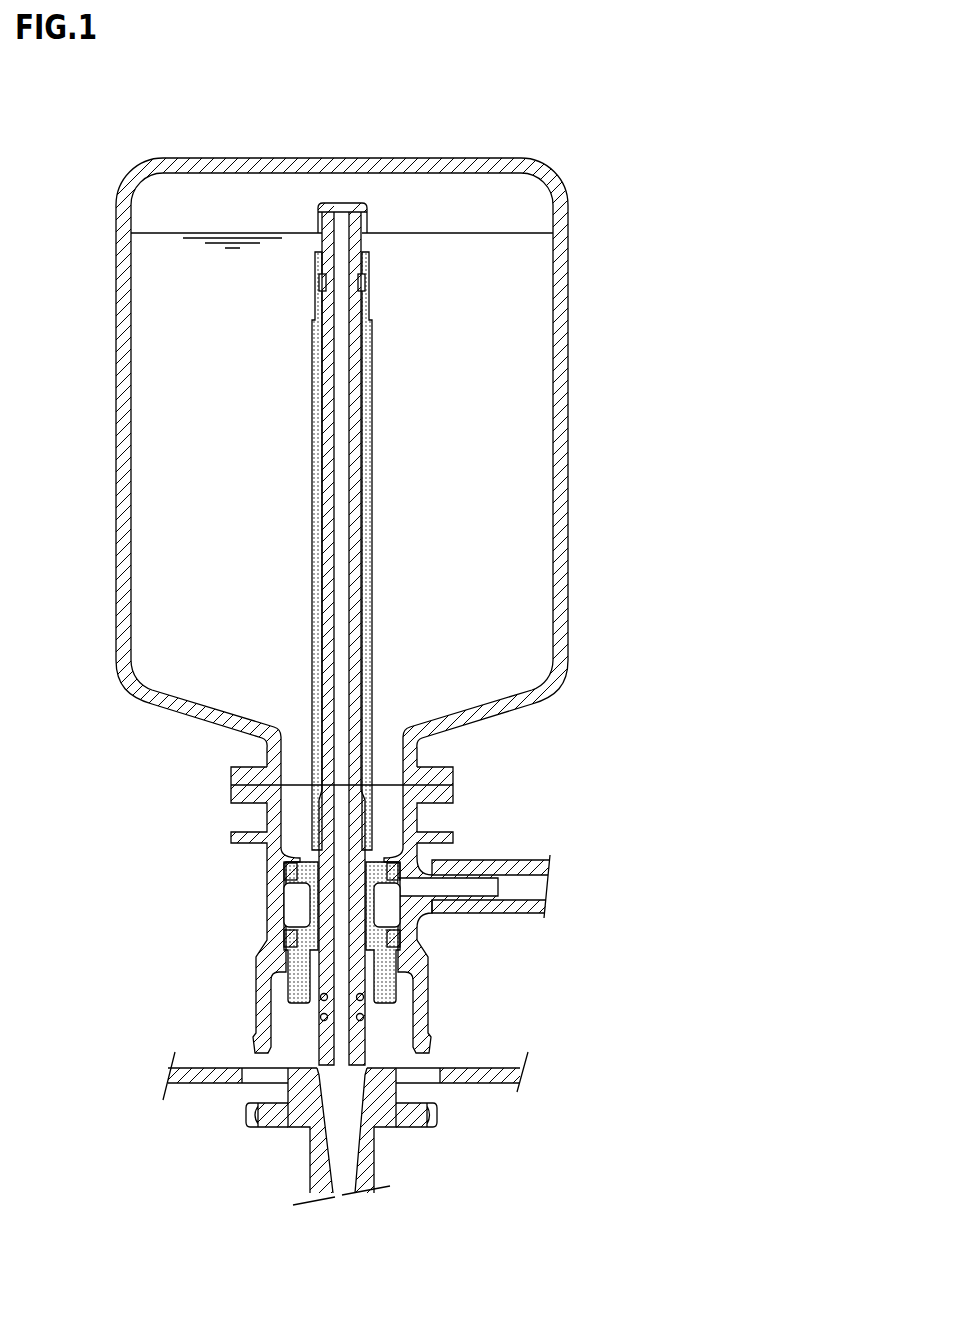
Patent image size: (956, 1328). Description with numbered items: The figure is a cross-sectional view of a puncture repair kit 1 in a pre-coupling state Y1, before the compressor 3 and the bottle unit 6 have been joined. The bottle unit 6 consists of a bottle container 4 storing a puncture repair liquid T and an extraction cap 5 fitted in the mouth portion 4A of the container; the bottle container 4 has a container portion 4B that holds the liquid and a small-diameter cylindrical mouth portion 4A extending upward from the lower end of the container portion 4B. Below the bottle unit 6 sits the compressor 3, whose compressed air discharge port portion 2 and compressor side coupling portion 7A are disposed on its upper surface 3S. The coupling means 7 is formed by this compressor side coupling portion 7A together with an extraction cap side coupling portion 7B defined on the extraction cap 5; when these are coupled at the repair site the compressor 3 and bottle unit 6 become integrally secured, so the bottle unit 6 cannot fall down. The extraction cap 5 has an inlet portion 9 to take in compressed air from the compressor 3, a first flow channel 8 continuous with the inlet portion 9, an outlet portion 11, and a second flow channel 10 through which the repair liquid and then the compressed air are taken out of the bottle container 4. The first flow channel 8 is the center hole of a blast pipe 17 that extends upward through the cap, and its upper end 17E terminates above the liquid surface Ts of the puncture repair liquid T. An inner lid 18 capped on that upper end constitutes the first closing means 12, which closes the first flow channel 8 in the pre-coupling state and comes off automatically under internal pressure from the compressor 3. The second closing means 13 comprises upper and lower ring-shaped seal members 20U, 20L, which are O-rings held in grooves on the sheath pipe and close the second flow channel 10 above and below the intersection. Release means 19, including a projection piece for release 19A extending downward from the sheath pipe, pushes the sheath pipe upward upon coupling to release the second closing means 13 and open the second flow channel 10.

The puncture repair kit 1 is at (617, 432).
The compressed air discharge port portion 2 is at (352, 1137).
The compressor 3 is at (503, 1068).
The upper surface 3S is at (465, 1068).
The bottle container 4 is at (694, 505).
The mouth portion 4A is at (540, 720).
The container portion 4B is at (568, 527).
The extraction cap 5 is at (528, 802).
The bottle unit 6 is at (727, 565).
The coupling means 7 is at (84, 987).
The compressor side coupling portion 7A is at (243, 1112).
The extraction cap side coupling portion 7B is at (252, 1008).
The first flow channel 8 is at (338, 585).
The inlet portion 9 is at (368, 1042).
The second flow channel 10 is at (470, 870).
The outlet portion 11 is at (513, 890).
The first closing means 12 is at (318, 212).
The second closing means 13 is at (149, 847).
The blast pipe 17 is at (328, 453).
The upper end 17E is at (345, 207).
The inner lid 18 is at (256, 646).
The release means 19 is at (256, 951).
The projection piece for release 19A is at (258, 1040).
The upper ring-shaped seal member 20U is at (290, 872).
The lower ring-shaped seal member 20L is at (288, 938).
The puncture repair liquid T is at (517, 352).
The liquid surface Ts is at (507, 232).
The pre-coupling state Y1 is at (215, 967).